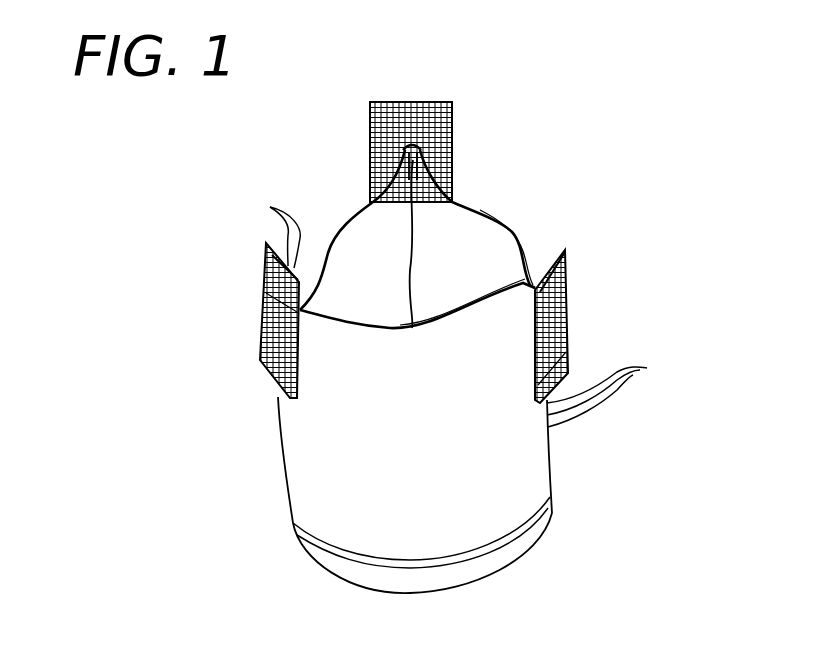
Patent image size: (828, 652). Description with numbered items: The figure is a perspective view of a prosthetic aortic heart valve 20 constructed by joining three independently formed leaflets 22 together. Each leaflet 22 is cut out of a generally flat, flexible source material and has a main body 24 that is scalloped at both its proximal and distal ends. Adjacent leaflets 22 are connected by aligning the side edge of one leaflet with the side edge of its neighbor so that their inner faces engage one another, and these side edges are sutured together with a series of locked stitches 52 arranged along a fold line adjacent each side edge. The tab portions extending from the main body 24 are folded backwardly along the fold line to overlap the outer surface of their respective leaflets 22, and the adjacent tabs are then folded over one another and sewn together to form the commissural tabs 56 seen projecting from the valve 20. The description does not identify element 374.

The aortic heart valve 20 is at (616, 187).
The leaflets 22 is at (360, 243).
The main body 24 is at (464, 288).
The locked stitches 52 is at (647, 368).
The commissural tabs 56 is at (387, 100).
The flap 374 is at (268, 223).